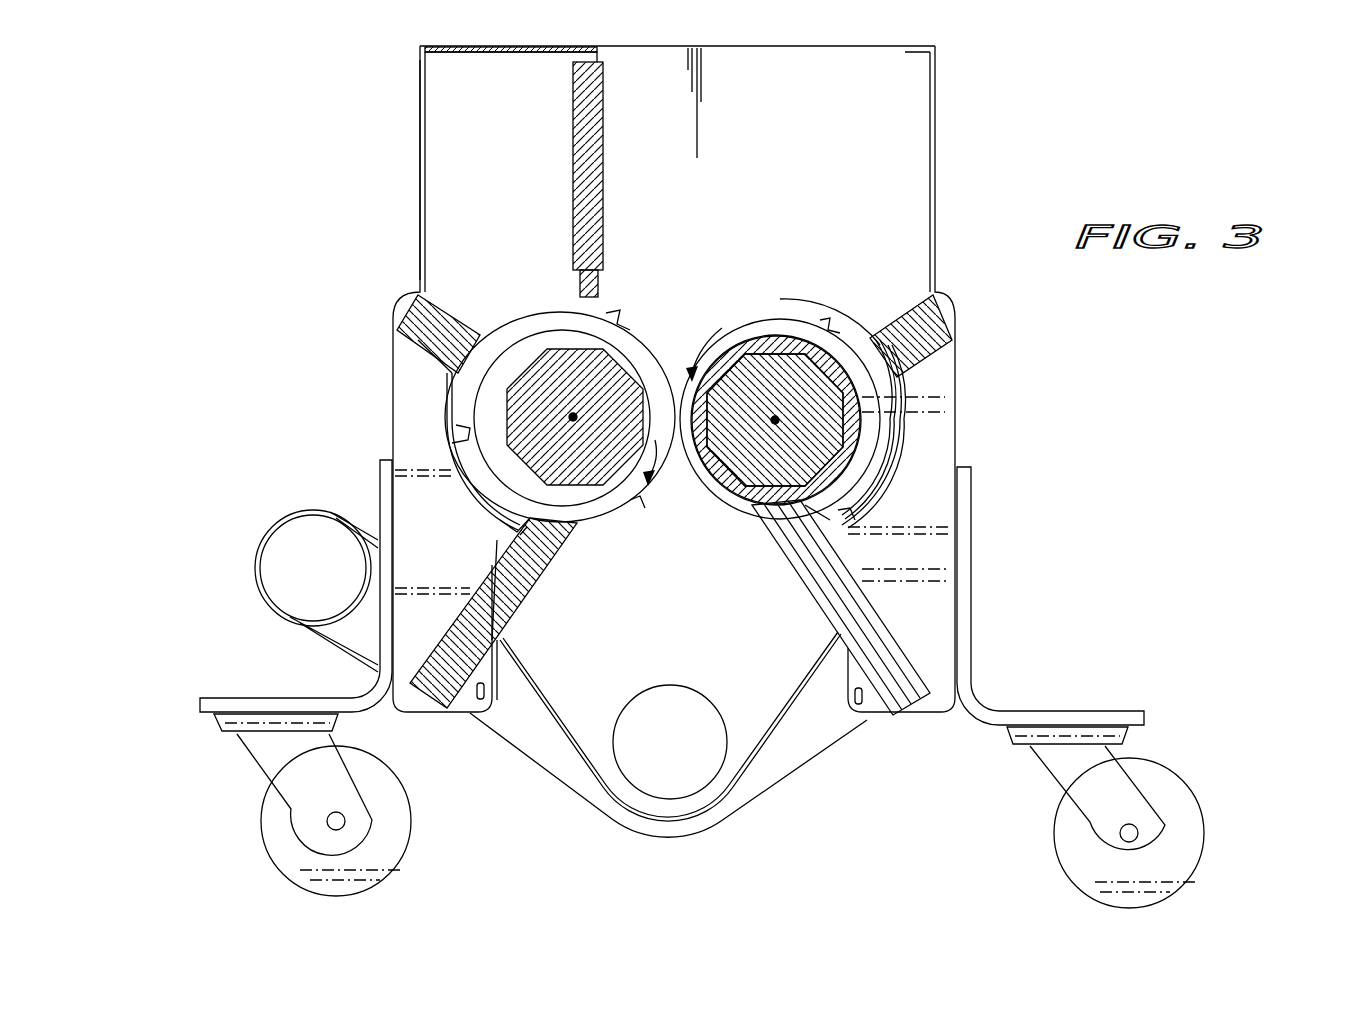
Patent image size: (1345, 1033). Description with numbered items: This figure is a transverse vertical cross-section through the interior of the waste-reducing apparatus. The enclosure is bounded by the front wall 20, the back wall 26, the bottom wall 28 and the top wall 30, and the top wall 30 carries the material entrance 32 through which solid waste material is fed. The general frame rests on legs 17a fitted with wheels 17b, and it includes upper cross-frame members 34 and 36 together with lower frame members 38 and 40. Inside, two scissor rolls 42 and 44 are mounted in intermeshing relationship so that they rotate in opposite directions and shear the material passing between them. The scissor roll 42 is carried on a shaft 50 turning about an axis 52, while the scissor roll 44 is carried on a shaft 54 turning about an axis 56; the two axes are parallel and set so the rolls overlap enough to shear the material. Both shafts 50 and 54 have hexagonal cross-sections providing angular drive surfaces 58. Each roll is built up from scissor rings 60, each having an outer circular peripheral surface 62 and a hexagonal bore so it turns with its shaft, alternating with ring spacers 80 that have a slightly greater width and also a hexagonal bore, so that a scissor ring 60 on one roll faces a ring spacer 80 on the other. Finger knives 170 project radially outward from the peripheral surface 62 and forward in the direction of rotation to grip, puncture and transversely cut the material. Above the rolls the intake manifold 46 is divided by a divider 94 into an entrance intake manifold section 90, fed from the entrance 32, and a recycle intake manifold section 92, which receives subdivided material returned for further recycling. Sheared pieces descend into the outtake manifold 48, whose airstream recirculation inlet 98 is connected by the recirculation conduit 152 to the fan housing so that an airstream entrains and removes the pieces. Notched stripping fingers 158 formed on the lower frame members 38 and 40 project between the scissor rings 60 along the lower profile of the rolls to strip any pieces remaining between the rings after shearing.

The legs 17a is at (252, 700).
The wheels 17b is at (288, 840).
The front wall 20 is at (937, 222).
The back wall 26 is at (420, 180).
The bottom wall 28 is at (703, 822).
The top wall 30 is at (492, 50).
The material entrance 32 is at (755, 46).
The upper cross-frame member 34 is at (437, 330).
The upper cross-frame member 36 is at (900, 330).
The lower frame member 38 is at (490, 622).
The lower frame member 40 is at (895, 663).
The scissor roll 42 is at (553, 296).
The scissor roll 44 is at (815, 296).
The intake manifold 46 is at (940, 134).
The outtake manifold 48 is at (666, 680).
The shaft 50 is at (530, 410).
The axis 52 is at (557, 405).
The shaft 54 is at (822, 405).
The axis 56 is at (748, 447).
The angular drive surfaces 58 is at (525, 490).
The scissor ring 60 is at (737, 330).
The outer circular peripheral surface 62 is at (500, 360).
The ring spacer 80 is at (781, 345).
The entrance intake manifold section 90 is at (739, 116).
The recycle intake manifold section 92 is at (497, 164).
The divider 94 is at (590, 212).
The airstream recirculation inlet 98 is at (622, 712).
The recirculation conduit 152 is at (258, 522).
The notched stripping fingers 158 is at (580, 532).
The finger knives 170 is at (615, 318).